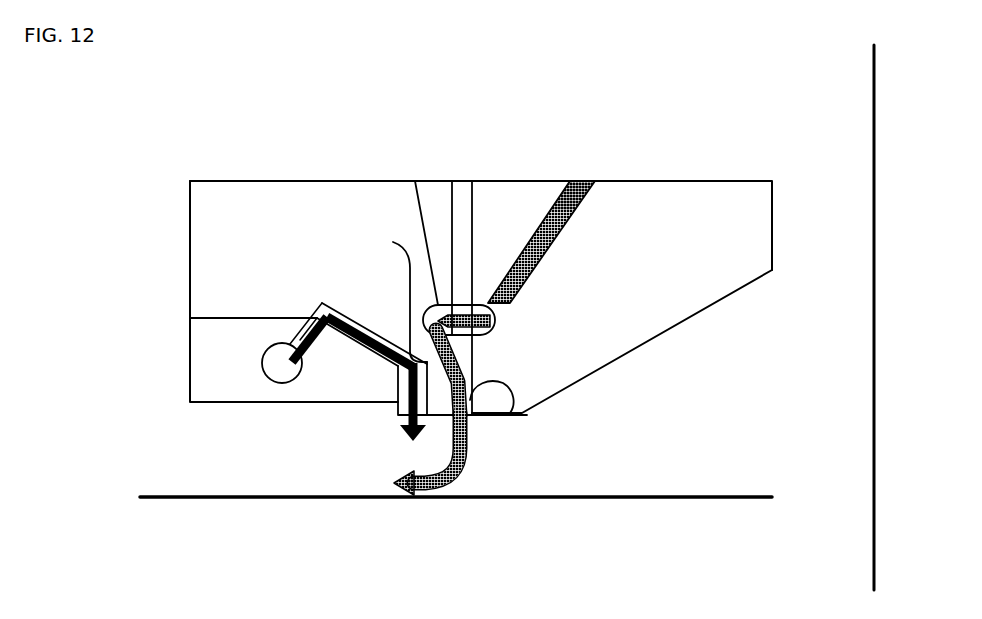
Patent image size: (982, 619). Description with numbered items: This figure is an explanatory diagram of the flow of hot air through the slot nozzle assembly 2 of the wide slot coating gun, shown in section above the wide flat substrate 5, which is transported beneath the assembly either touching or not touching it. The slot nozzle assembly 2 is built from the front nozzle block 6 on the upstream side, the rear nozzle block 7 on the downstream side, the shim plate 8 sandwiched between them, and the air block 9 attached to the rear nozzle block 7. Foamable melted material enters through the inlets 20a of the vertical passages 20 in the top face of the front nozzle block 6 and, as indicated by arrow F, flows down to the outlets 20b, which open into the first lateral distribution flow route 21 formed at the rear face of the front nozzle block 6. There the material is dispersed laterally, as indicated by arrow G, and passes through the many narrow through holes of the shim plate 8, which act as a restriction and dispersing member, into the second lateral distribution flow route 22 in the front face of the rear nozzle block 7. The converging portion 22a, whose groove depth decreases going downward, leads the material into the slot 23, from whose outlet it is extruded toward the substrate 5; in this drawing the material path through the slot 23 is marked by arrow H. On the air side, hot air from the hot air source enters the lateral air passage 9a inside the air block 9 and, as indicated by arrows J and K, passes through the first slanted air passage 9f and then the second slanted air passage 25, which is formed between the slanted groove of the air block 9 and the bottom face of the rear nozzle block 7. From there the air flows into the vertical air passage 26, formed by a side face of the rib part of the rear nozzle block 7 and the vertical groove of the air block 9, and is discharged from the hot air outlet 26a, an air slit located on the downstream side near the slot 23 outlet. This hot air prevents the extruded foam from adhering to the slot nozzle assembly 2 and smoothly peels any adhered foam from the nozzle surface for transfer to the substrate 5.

The slot nozzle assembly 2 is at (766, 161).
The wide flat substrate 5 is at (731, 500).
The front nozzle block 6 is at (610, 340).
The rear nozzle block 7 is at (218, 233).
The shim plate 8 is at (467, 195).
The air block 9 is at (210, 382).
The lateral air passage 9a is at (257, 376).
The first slanted air passage 9f is at (333, 360).
The vertical passages 20 is at (546, 203).
The inlets 20a is at (593, 180).
The outlets 20b is at (497, 318).
The first lateral distribution flow route 21 is at (495, 335).
The second lateral distribution flow route 22 is at (423, 207).
The converging portion 22a is at (389, 291).
The slot 23 is at (496, 415).
The second slanted air passage 25 is at (357, 320).
The vertical air passage 26 is at (391, 333).
The hot air outlet 26a is at (398, 405).
The arrows F is at (562, 233).
The arrows G is at (482, 304).
The flow direction H is at (492, 418).
The arrow J is at (300, 353).
The arrow K is at (399, 369).